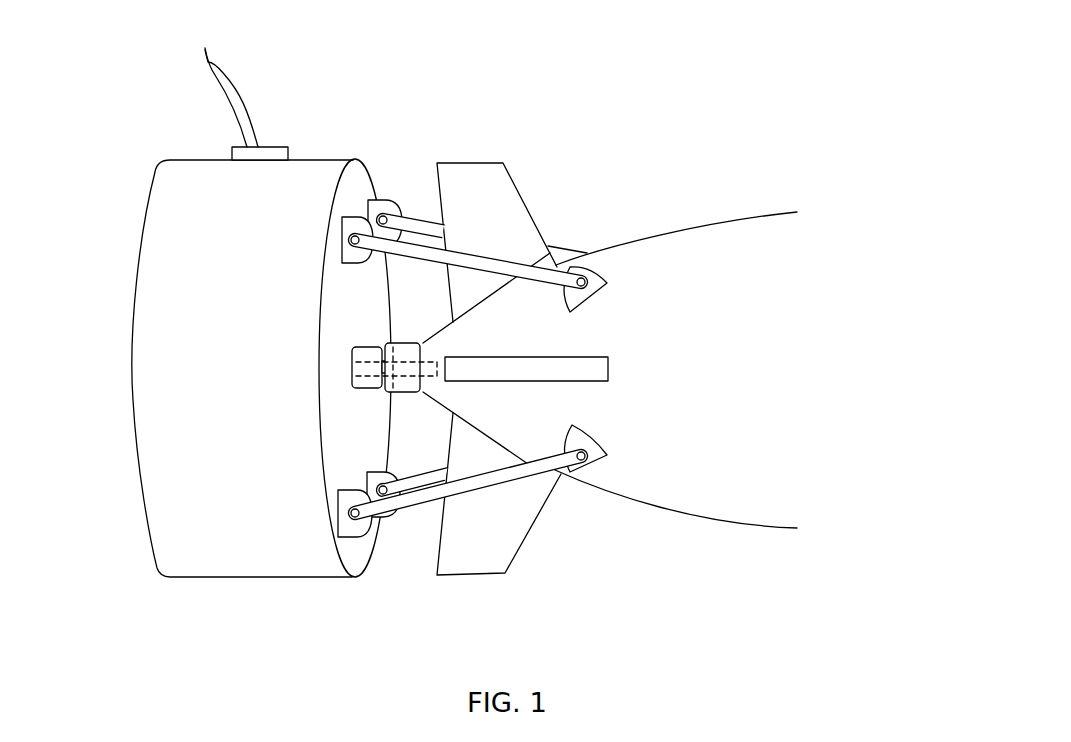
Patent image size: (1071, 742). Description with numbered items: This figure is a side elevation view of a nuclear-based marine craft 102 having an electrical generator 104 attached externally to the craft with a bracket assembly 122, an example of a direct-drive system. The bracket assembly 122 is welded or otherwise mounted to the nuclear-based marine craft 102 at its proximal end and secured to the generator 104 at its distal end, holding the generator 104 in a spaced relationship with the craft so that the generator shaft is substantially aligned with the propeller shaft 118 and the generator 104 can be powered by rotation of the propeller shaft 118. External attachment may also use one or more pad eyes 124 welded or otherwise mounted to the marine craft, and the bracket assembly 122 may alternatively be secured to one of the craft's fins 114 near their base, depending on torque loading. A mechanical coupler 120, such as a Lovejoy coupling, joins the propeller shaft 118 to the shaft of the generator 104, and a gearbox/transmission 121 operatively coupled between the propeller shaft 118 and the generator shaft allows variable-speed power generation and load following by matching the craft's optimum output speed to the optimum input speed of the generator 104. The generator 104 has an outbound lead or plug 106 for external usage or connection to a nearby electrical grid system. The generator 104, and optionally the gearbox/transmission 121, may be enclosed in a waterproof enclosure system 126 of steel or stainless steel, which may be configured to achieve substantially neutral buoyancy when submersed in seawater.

The nuclear-based marine craft 102 is at (705, 382).
The electrical generator 104 is at (148, 465).
The outbound lead or plug 106 is at (233, 76).
The fins 114 is at (508, 178).
The propeller shaft 118 is at (419, 343).
The mechanical coupler 120 is at (412, 393).
The gearbox/transmission 121 is at (360, 346).
The bracket assembly 122 is at (498, 267).
The pad eyes 124 is at (595, 458).
The waterproof enclosure system 126 is at (255, 379).